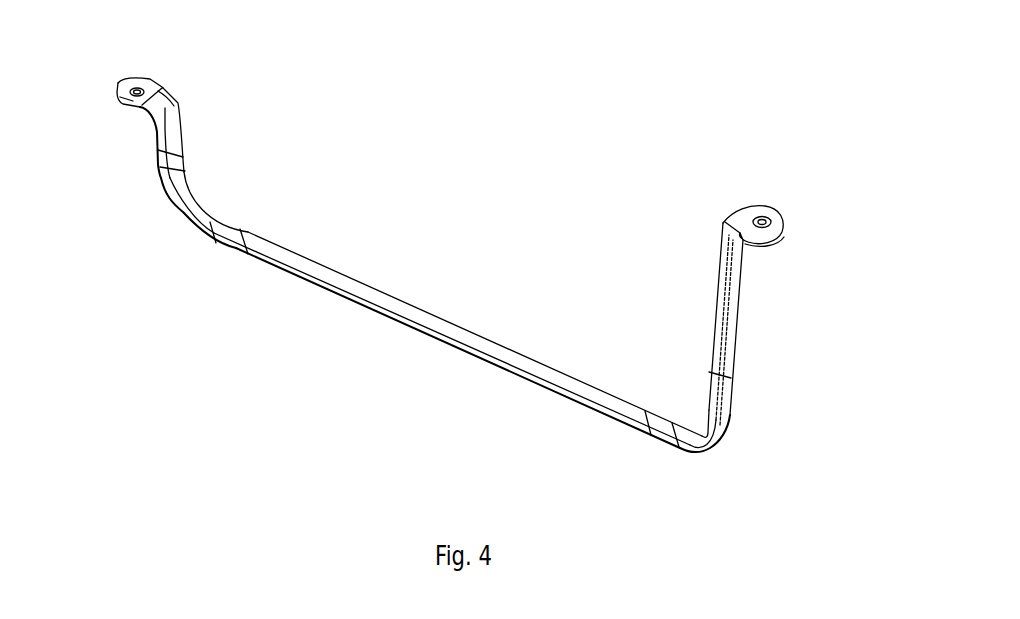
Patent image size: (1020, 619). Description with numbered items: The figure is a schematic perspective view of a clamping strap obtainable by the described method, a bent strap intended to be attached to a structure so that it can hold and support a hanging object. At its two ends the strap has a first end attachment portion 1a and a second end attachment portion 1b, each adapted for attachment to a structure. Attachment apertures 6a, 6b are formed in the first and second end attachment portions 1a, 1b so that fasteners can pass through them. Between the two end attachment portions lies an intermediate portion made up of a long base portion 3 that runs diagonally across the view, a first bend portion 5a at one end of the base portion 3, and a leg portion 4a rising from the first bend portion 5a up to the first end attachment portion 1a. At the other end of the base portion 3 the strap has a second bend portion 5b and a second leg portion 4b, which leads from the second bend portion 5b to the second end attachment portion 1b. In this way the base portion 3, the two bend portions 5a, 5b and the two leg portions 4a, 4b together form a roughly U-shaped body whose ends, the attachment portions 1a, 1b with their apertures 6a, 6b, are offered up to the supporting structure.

The first end attachment portion 1a is at (773, 230).
The second end attachment portion 1b is at (118, 90).
The base portion 3 is at (498, 353).
The leg portion 4a is at (730, 303).
The second leg portion 4b is at (162, 157).
The first bend portion 5a is at (700, 451).
The second bend portion 5b is at (187, 215).
The attachment aperture 6a is at (755, 220).
The attachment aperture 6b is at (138, 84).